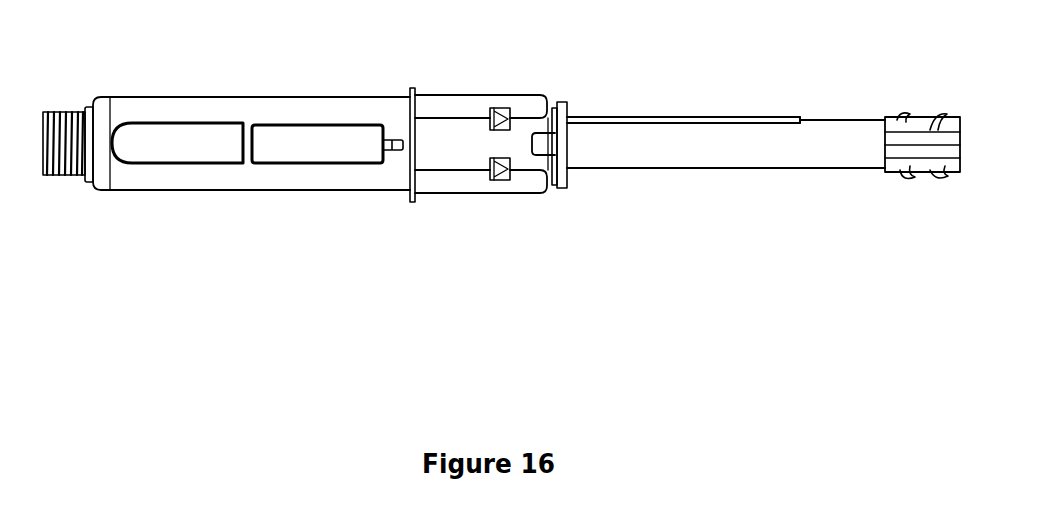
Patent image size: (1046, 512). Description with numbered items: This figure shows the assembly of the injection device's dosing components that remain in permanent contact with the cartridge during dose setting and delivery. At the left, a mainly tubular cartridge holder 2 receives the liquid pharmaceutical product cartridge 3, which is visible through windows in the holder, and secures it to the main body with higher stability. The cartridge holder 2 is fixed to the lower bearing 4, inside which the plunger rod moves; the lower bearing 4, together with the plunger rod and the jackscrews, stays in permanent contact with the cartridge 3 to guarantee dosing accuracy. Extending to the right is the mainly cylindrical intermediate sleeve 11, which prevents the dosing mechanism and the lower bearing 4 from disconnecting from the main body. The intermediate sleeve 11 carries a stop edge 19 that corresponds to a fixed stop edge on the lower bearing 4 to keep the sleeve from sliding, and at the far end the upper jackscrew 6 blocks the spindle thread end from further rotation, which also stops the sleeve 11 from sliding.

The cartridge holder 2 is at (245, 178).
The cartridge 3 is at (197, 145).
The lower bearing 4 is at (546, 145).
The upper jackscrew 6 is at (910, 152).
The intermediate sleeve 11 is at (683, 140).
The stop edge 19 is at (800, 170).